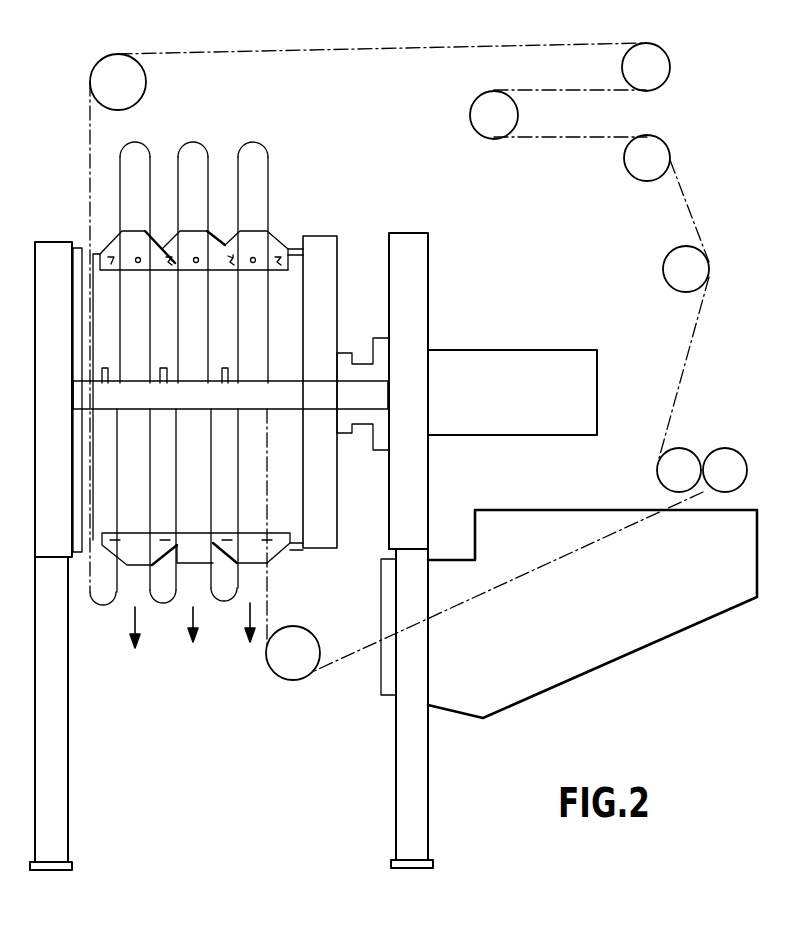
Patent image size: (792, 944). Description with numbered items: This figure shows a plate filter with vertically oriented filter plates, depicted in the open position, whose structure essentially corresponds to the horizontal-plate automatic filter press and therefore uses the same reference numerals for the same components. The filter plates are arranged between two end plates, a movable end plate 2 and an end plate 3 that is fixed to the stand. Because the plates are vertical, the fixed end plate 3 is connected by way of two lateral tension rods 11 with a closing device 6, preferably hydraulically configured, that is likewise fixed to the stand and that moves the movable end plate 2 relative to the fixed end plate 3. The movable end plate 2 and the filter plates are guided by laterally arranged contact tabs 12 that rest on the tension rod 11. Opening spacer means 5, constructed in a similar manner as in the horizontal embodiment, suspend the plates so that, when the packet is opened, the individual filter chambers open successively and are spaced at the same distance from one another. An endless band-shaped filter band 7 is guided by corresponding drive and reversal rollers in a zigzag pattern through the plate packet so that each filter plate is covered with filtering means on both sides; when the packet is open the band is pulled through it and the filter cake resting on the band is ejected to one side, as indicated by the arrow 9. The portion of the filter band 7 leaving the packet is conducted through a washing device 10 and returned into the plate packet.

The end plate 2 is at (327, 264).
The end plate 3 is at (52, 250).
The opening spacers 5 is at (257, 242).
The closing device 6 is at (158, 282).
The filter band 7 is at (690, 335).
The arrow 9 is at (128, 620).
The washing device 10 is at (602, 647).
The tension rods 11 is at (363, 398).
The contact tabs 12 is at (321, 378).